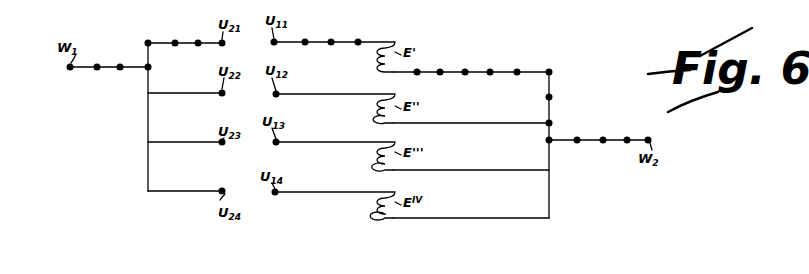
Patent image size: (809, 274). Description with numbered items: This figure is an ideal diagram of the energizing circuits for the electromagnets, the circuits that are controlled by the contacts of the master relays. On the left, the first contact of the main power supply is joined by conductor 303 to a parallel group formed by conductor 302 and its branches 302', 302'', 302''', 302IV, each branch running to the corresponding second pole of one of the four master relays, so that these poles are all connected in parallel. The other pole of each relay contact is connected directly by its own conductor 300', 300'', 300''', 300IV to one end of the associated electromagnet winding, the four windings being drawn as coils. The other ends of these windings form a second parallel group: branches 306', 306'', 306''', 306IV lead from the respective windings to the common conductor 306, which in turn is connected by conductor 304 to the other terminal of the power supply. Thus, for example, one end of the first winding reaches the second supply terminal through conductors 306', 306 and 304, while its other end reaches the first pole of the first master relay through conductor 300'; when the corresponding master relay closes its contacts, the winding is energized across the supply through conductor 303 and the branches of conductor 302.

The conductor 300' is at (333, 45).
The conductor 300'' is at (334, 98).
The conductor 300''' is at (334, 147).
The conductor 300IV is at (345, 186).
The conductor 302 is at (128, 117).
The branch of conductor 302 302' is at (184, 31).
The branch of conductor 302 302'' is at (187, 85).
The branch of conductor 302 302''' is at (187, 135).
The branch of conductor 302 302IV is at (197, 190).
The conductor 303 is at (104, 69).
The conductor 304 is at (590, 138).
The conductor 306 is at (567, 144).
The branch of conductor 306 306' is at (471, 62).
The branch of conductor 306 306'' is at (471, 117).
The branch of conductor 306 306''' is at (471, 161).
The branch of conductor 306 306IV is at (492, 212).